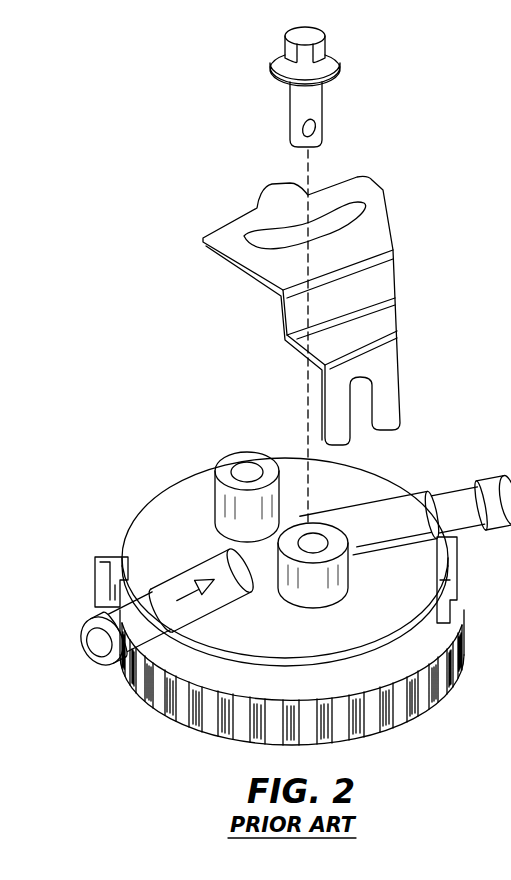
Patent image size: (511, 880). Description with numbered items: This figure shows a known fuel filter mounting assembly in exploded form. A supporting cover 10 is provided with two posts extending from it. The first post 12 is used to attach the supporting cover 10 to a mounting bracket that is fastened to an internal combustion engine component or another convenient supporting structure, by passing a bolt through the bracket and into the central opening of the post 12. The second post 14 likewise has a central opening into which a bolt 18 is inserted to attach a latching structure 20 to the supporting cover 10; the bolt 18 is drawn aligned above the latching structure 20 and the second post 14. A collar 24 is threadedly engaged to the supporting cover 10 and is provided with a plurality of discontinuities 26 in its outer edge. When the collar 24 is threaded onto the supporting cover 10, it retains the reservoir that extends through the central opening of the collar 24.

The supporting cover 10 is at (367, 487).
The post 12 is at (217, 505).
The second post 14 is at (330, 592).
The bolt 18 is at (318, 113).
The latching structure 20 is at (380, 282).
The collar 24 is at (218, 680).
The discontinuities 26 is at (452, 668).